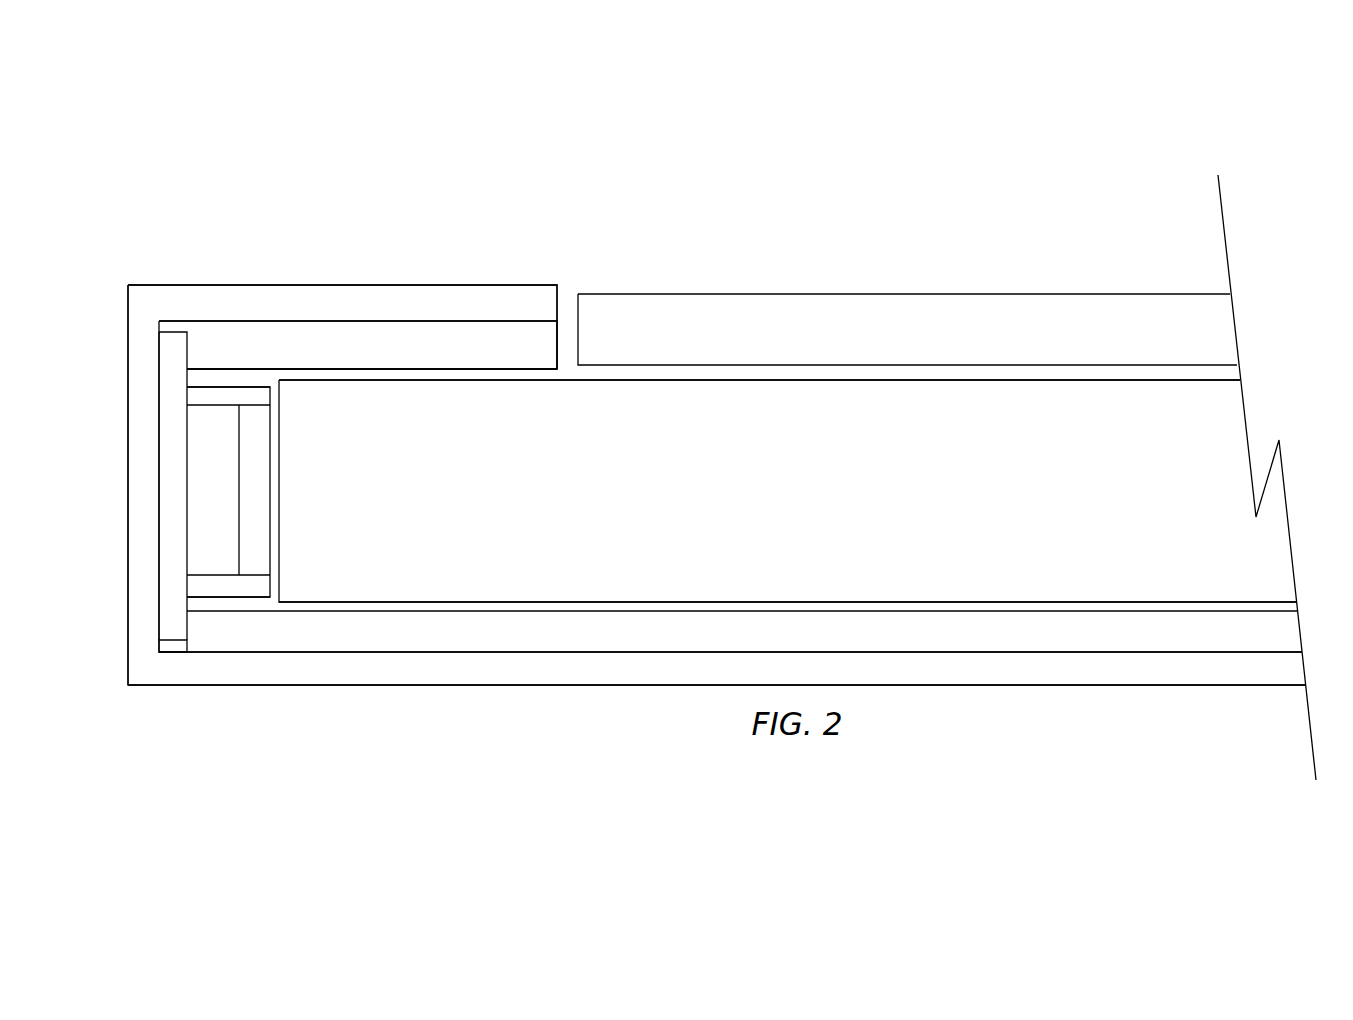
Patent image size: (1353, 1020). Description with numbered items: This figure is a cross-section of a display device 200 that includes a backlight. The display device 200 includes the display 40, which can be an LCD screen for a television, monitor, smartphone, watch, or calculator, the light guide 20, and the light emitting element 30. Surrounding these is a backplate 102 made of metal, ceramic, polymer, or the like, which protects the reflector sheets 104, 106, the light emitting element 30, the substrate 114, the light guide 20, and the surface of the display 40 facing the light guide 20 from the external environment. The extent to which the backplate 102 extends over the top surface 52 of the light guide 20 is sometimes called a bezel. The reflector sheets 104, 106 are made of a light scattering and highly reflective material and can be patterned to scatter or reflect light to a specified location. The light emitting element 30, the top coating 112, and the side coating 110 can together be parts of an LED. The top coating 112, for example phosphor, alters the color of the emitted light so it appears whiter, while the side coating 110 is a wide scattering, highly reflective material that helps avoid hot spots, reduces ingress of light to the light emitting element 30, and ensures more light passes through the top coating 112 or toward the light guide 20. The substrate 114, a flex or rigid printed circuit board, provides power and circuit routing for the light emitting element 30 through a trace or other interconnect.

The display device 200 is at (207, 172).
The backplate 102 is at (428, 302).
The reflector sheet 104 is at (1262, 622).
The reflector sheet 106 is at (505, 357).
The light emitting element 30 is at (200, 495).
The substrate 114 is at (180, 643).
The side coating 110 is at (250, 385).
The top coating 112 is at (258, 495).
The top surface 52 is at (888, 382).
The light guide 20 is at (1013, 388).
The display 40 is at (1177, 308).